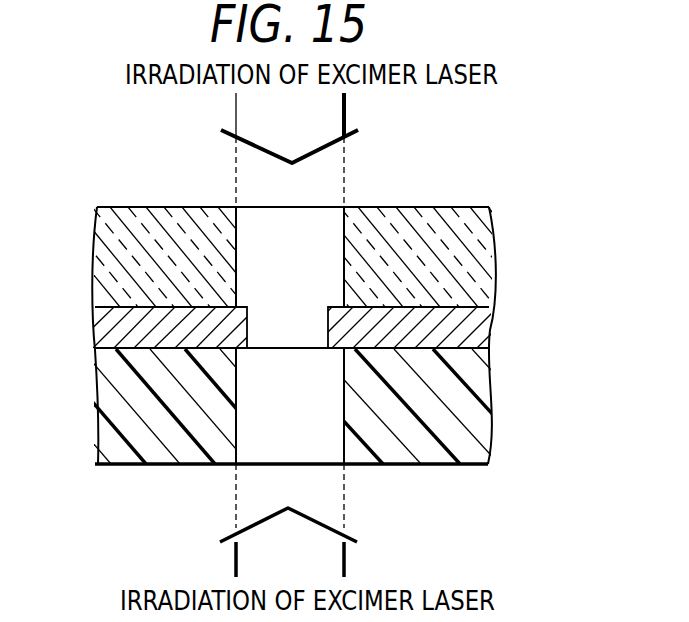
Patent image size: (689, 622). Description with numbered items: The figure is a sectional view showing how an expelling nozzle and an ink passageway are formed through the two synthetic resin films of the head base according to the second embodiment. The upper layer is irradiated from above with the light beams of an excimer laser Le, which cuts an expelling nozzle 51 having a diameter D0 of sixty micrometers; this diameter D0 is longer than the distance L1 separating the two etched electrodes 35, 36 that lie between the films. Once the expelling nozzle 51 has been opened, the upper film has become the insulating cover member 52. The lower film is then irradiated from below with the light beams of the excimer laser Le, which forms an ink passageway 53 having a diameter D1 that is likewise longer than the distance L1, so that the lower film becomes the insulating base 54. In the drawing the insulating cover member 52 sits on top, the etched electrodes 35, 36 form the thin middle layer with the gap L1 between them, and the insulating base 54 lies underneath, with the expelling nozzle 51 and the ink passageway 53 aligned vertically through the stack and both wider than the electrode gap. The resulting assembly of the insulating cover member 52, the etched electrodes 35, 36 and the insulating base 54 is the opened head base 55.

The etched electrode 35 is at (93, 325).
The etched electrode 36 is at (488, 335).
The expelling nozzle 51 is at (338, 208).
The insulating cover member 52 is at (97, 232).
The ink passageway 53 is at (251, 464).
The insulating base 54 is at (96, 398).
The opened head base 55 is at (528, 198).
The excimer laser Le is at (333, 122).
The diameter of expelling nozzle D0 is at (344, 196).
The diameter of ink passageway D1 is at (344, 500).
The distance between etched electrodes L1 is at (328, 322).